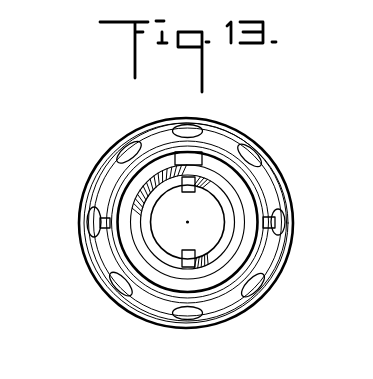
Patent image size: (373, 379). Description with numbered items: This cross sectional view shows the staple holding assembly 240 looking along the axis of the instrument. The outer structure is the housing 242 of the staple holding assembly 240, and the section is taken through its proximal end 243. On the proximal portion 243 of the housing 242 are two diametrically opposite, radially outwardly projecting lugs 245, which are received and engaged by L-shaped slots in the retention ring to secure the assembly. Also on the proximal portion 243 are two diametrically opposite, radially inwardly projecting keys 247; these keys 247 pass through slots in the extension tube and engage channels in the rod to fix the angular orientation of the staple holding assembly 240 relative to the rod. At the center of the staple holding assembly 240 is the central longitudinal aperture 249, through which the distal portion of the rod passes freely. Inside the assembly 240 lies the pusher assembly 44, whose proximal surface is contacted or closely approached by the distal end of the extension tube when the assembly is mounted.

The staple holding assembly 240 is at (316, 117).
The housing 242 is at (120, 300).
The proximal end 243 is at (142, 168).
The pusher assembly 44 is at (142, 190).
The lugs 245 is at (88, 213).
The keys 247 is at (196, 182).
The central longitudinal aperture 249 is at (204, 240).